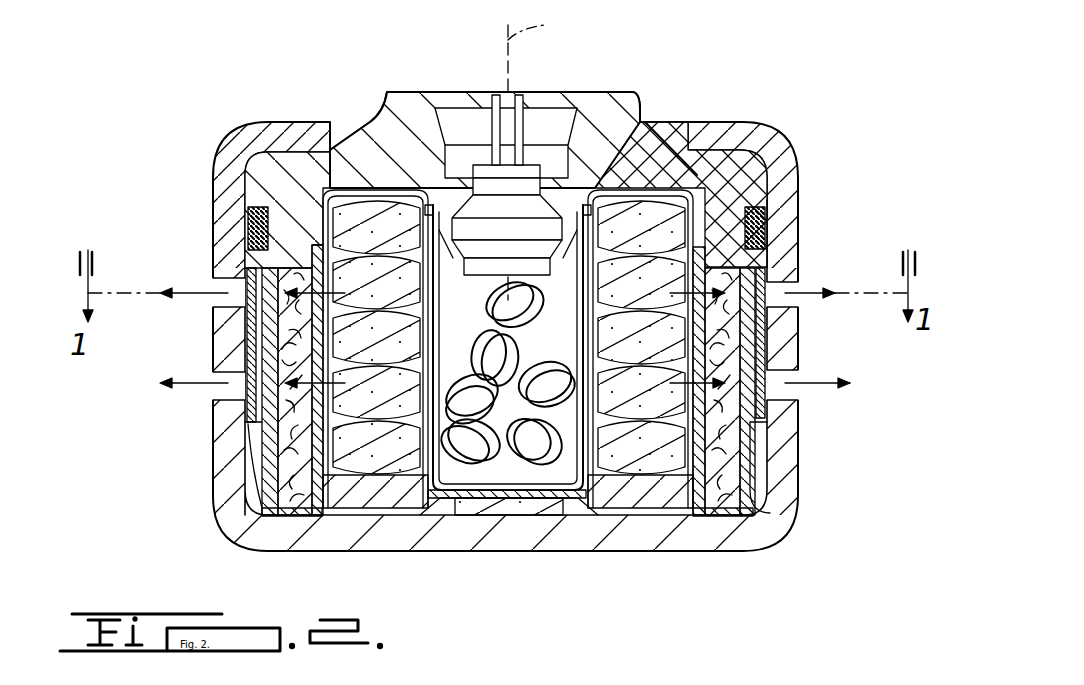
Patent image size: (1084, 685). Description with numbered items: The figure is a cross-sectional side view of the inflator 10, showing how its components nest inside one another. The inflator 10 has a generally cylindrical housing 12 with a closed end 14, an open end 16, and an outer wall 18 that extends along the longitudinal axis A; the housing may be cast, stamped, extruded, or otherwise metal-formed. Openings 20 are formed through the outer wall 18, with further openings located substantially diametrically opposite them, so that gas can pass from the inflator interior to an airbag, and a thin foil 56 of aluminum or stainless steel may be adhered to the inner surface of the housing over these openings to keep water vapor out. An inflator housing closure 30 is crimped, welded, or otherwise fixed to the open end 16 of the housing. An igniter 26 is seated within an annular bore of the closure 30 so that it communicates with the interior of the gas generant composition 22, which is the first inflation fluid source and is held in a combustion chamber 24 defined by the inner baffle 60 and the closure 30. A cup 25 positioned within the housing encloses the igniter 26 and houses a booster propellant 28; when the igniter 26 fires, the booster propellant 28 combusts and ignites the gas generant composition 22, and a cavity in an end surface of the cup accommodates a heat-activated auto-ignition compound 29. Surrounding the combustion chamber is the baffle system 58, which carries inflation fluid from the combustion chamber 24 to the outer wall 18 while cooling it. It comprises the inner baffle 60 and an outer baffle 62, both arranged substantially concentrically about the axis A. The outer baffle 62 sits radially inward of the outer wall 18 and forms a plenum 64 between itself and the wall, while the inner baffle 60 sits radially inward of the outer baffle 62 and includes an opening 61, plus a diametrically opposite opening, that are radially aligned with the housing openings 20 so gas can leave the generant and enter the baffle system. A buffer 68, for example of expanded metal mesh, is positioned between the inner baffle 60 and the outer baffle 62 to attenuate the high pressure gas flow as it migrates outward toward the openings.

The inflator 10 is at (866, 526).
The housing 12 is at (812, 180).
The closed end 14 is at (786, 543).
The open end 16 is at (660, 100).
The outer wall 18 is at (788, 218).
The openings 20 is at (788, 277).
The gas generant composition 22 is at (672, 195).
The combustion chamber 24 is at (755, 205).
The cup 25 is at (430, 468).
The igniter 26 is at (490, 122).
The booster propellant 28 is at (527, 462).
The auto-ignition compound 29 is at (533, 502).
The inflator housing closure 30 is at (588, 100).
The foil 56 is at (258, 402).
The baffle system 58 is at (287, 517).
The inner baffle 60 is at (318, 245).
The opening 61 is at (752, 400).
The outer baffle 62 is at (245, 292).
The plenum 64 is at (758, 335).
The buffer 68 is at (722, 458).
The longitudinal axis A is at (536, 23).